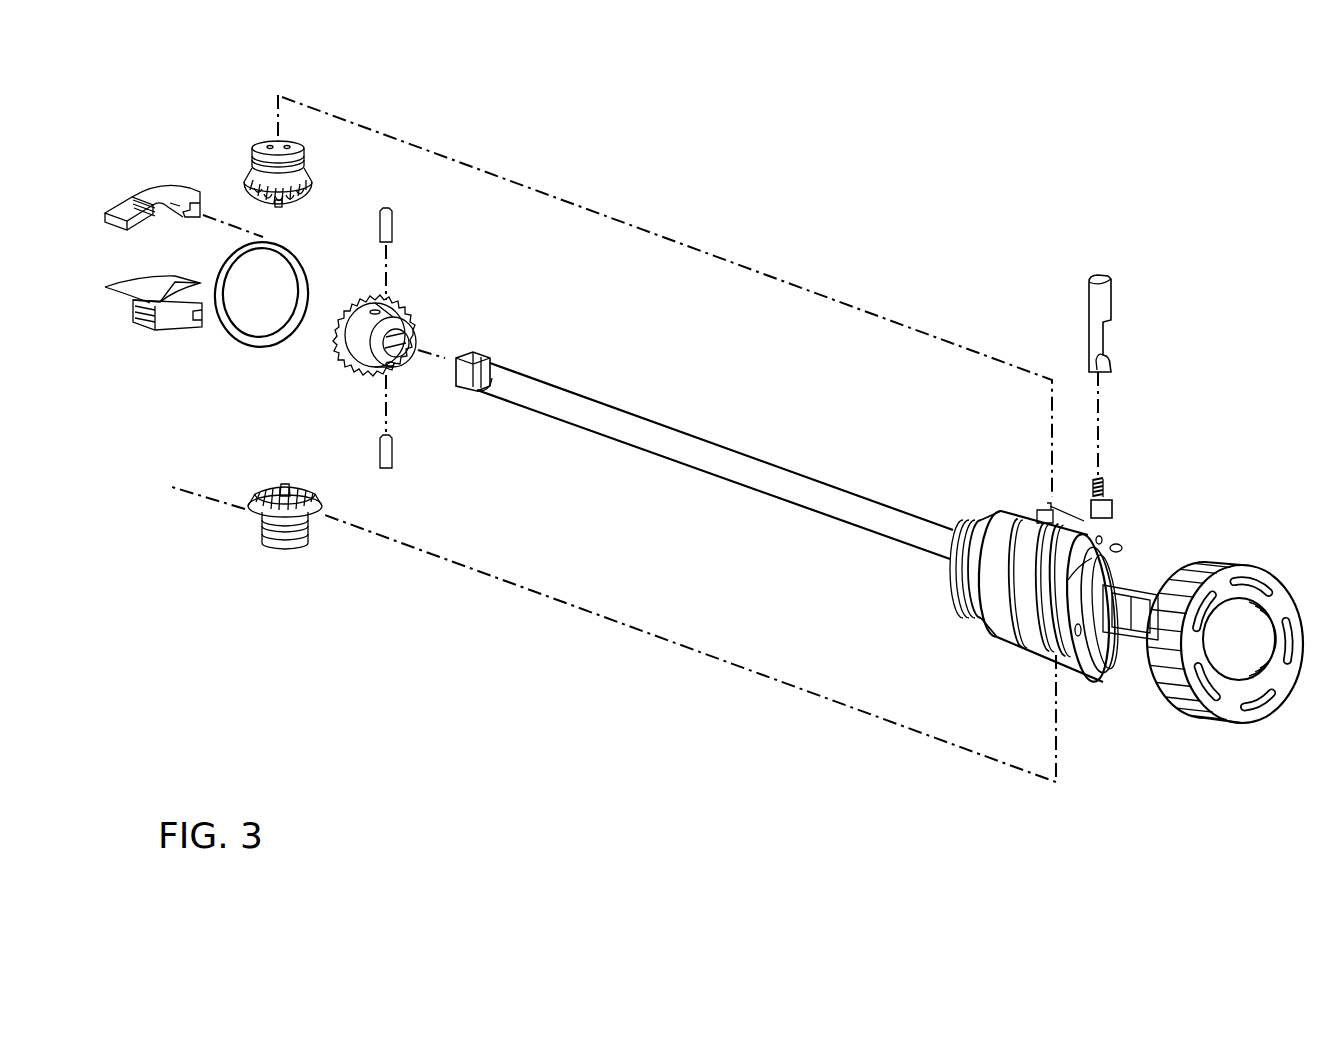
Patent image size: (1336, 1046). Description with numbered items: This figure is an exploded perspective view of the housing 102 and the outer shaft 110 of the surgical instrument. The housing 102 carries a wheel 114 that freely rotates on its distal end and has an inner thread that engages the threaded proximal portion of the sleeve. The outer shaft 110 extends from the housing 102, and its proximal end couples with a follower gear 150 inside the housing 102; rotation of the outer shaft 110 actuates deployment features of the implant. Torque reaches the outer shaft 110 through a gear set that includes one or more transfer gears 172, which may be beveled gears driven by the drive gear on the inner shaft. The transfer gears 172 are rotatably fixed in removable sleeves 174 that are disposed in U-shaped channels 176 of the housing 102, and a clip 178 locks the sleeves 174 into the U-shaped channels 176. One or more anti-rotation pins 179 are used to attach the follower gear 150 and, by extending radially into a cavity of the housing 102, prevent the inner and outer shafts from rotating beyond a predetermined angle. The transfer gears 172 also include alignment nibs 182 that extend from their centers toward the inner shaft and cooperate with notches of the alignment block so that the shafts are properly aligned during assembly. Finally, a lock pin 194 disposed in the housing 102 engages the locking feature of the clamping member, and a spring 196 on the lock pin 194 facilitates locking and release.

The housing 102 is at (1012, 630).
The outer shaft 110 is at (715, 445).
The wheel 114 is at (1255, 565).
The follower gear 150 is at (415, 323).
The transfer gears 172 is at (248, 173).
The removable sleeves 174 is at (125, 200).
The U-shaped channels 176 is at (1025, 485).
The clip 178 is at (256, 345).
The anti-rotation pins 179 is at (392, 225).
The alignment nibs 182 is at (280, 204).
The lock pin 194 is at (1105, 308).
The spring 196 is at (1107, 490).